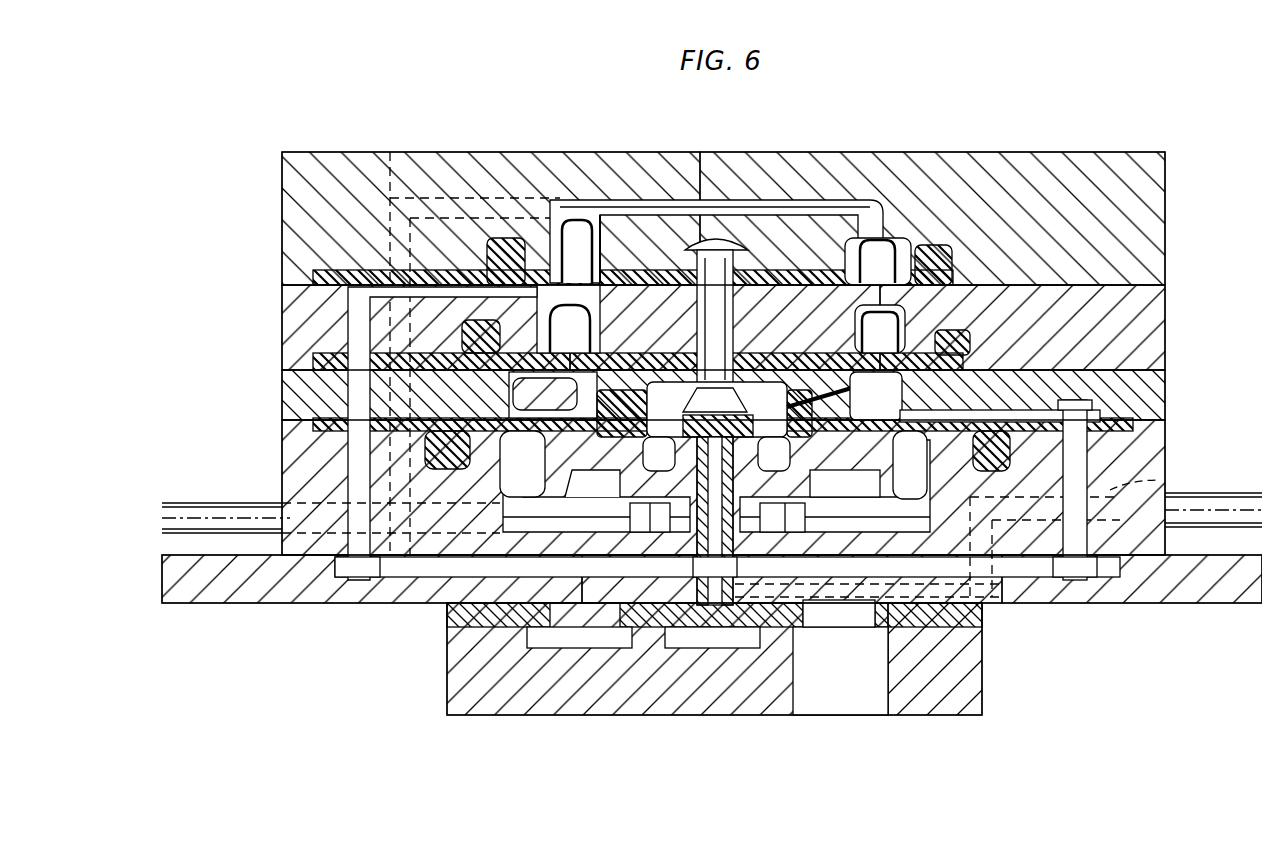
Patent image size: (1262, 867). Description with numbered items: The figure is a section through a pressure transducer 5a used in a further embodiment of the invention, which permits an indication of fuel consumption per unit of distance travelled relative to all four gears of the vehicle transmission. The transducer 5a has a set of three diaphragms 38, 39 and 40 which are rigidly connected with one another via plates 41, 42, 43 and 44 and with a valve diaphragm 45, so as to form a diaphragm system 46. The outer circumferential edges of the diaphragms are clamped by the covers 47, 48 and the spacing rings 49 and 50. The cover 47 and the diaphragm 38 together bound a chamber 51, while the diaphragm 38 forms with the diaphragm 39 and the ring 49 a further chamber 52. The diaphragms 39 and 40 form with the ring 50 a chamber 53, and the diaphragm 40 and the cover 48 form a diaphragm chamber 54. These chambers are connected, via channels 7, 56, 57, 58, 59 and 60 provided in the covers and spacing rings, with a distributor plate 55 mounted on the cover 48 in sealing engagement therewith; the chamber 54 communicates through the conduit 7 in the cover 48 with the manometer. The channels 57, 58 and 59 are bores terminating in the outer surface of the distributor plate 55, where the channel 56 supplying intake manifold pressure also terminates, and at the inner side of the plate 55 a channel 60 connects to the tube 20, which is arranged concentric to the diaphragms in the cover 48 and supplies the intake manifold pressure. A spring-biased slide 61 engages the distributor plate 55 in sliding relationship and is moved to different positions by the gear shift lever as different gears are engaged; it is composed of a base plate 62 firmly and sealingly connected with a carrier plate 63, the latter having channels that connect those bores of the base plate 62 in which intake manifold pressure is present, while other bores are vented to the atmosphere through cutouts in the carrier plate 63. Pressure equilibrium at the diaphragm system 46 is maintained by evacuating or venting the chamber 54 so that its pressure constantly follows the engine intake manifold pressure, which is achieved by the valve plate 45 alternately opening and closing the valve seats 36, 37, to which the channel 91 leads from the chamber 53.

The pressure transducer 5a is at (908, 152).
The conduit 7 is at (205, 506).
The tube 20 is at (725, 537).
The valve seat 36 is at (845, 485).
The valve seat 37 is at (717, 409).
The diaphragm 38 is at (572, 200).
The diaphragm 39 is at (568, 314).
The diaphragm 40 is at (535, 497).
The plate 41 is at (628, 215).
The plate 42 is at (763, 268).
The plate 43 is at (800, 398).
The plate 44 is at (880, 449).
The valve diaphragm 45 is at (718, 412).
The diaphragm system 46 is at (796, 250).
The cover 47 is at (282, 168).
The cover 48 is at (282, 448).
The spacing ring 49 is at (282, 331).
The spacing ring 50 is at (282, 382).
The chamber 51 is at (724, 200).
The chamber 52 is at (598, 215).
The chamber 53 is at (920, 330).
The diaphragm chamber 54 is at (932, 497).
The distributor plate 55 is at (252, 603).
The channel 56 is at (1160, 476).
The channel 57 is at (359, 580).
The channel 58 is at (1076, 580).
The channel 59 is at (388, 152).
The channel 60 is at (1010, 603).
The slide 61 is at (992, 611).
The base plate 62 is at (445, 612).
The carrier plate 63 is at (562, 715).
The channel 91 is at (855, 380).